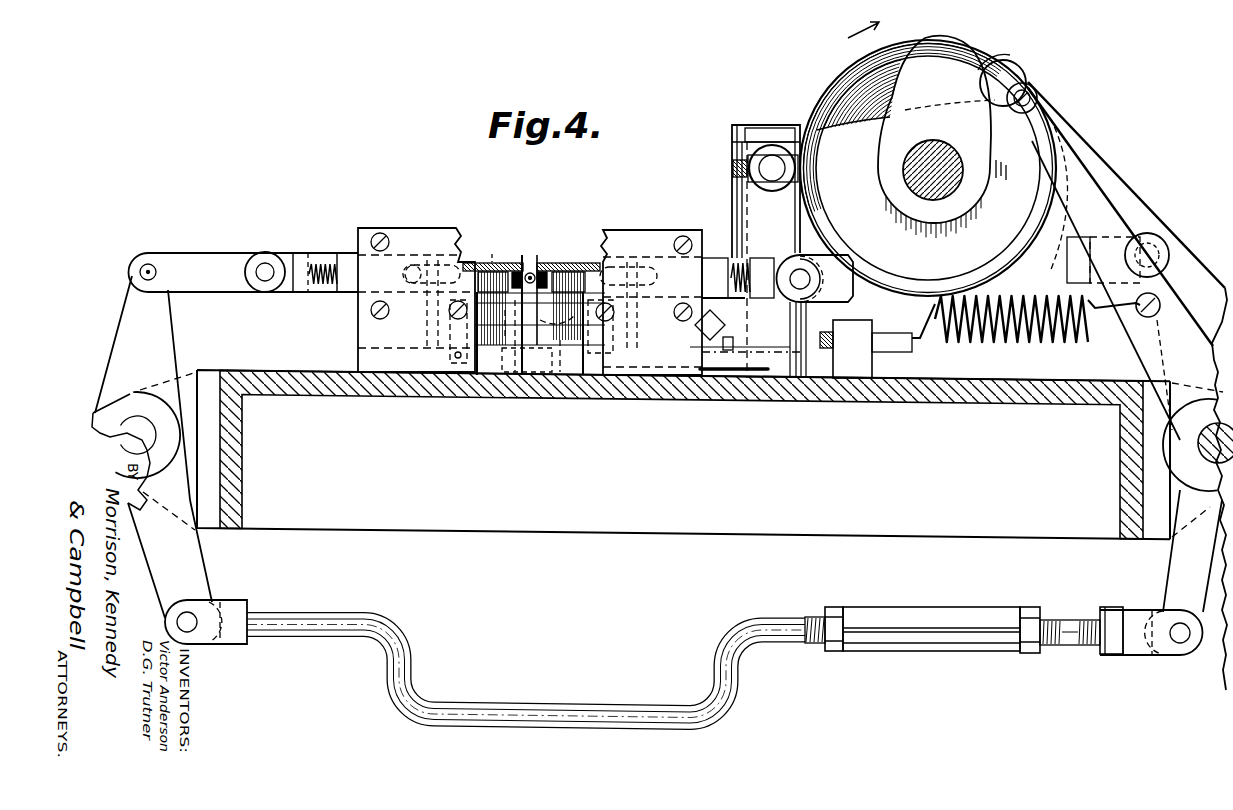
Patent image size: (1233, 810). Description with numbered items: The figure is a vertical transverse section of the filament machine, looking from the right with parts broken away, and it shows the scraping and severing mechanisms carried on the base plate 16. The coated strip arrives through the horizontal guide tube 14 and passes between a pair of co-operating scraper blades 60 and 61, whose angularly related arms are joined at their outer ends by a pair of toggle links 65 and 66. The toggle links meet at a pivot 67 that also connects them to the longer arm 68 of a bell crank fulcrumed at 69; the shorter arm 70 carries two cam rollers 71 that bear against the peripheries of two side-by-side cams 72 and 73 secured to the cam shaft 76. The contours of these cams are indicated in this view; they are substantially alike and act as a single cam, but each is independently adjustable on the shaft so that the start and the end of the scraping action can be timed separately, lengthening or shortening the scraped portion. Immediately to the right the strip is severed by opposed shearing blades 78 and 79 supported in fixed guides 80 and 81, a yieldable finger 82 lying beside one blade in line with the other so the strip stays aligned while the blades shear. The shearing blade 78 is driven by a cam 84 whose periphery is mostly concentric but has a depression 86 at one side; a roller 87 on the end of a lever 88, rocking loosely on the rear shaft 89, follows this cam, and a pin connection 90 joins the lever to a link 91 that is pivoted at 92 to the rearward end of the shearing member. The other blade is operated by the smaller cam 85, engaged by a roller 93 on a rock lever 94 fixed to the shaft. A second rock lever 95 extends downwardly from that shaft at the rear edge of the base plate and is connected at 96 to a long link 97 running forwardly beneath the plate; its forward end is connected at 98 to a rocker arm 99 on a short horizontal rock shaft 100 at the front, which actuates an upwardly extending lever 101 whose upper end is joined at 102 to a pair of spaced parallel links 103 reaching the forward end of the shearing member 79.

The horizontal guide tube 14 is at (530, 272).
The base plate 16 is at (288, 371).
The scraper blade 60 is at (512, 263).
The scraper blade 61 is at (552, 262).
The toggle link 65 is at (450, 332).
The toggle link 66 is at (630, 328).
The pivot 67 is at (555, 378).
The bell crank arm 68 is at (711, 378).
The fulcrum 69 is at (752, 126).
The bell crank arm 70 is at (732, 167).
The cam rollers 71 is at (776, 192).
The cam 72 is at (1066, 136).
The cam 73 is at (843, 78).
The cam shaft 76 is at (946, 155).
The shearing blade 78 is at (760, 262).
The shearing blade 79 is at (337, 262).
The fixed guide 80 is at (655, 237).
The fixed guide 81 is at (408, 237).
The yieldable bar or finger 82 is at (577, 262).
The cam 84 is at (928, 168).
The cam 85 is at (934, 137).
The depression 86 is at (930, 118).
The roller 87 is at (1020, 70).
The lever 88 is at (1139, 211).
The rear shaft 89 is at (1206, 445).
The pin connection 90 is at (1128, 236).
The link 91 is at (906, 302).
The pivotal connection 92 is at (793, 298).
The roller 93 is at (1040, 94).
The rock lever 94 is at (1137, 353).
The rock lever 95 is at (1180, 570).
The connection 96 is at (1180, 645).
The long link 97 is at (358, 612).
The connection 98 is at (194, 612).
The rocker arm 99 is at (188, 548).
The rock shaft 100 is at (116, 416).
The lever 101 is at (142, 388).
The connection 102 is at (152, 263).
The parallel links 103 is at (244, 272).